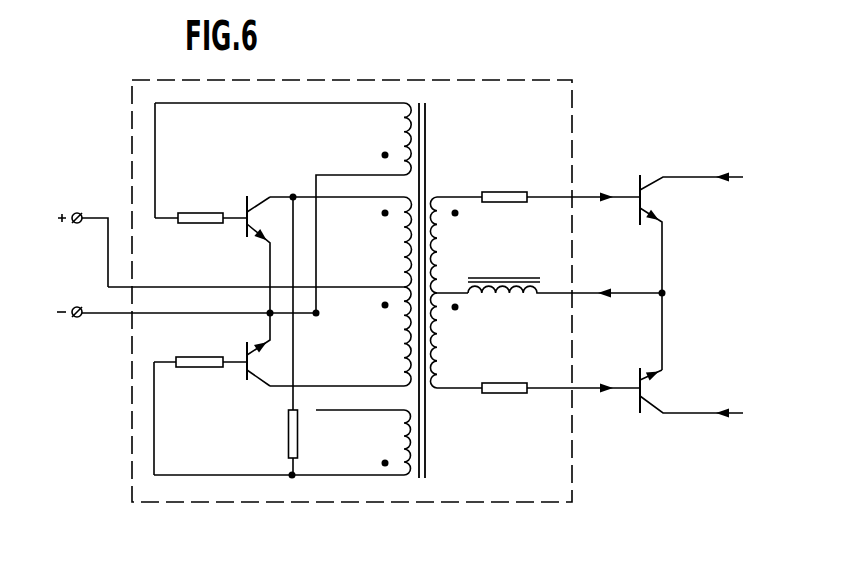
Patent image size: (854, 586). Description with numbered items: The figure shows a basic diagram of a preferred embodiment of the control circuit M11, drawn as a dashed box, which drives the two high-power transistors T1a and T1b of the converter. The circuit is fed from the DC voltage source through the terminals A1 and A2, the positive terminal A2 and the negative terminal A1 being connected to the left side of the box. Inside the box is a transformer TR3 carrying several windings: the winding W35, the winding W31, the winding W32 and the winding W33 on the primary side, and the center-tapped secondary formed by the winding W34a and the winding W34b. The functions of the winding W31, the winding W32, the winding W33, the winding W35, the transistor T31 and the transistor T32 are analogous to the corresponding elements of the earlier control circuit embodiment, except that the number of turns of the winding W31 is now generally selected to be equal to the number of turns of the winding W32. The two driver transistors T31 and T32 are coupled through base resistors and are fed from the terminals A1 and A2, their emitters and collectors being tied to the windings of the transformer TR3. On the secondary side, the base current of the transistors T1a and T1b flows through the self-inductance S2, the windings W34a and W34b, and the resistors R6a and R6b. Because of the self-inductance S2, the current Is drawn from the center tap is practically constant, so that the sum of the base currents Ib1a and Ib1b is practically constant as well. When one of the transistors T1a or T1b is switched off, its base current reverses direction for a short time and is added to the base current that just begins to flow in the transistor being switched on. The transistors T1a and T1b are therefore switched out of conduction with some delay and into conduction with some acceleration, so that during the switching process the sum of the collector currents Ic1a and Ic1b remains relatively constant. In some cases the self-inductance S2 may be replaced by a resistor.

The control circuit M11 is at (563, 486).
The transformer TR3 is at (440, 293).
The winding W35 is at (283, 208).
The winding W31 is at (260, 242).
The winding W32 is at (340, 336).
The winding W33 is at (282, 442).
The winding W34a is at (459, 340).
The winding W34b is at (459, 245).
The self-inductance S2 is at (565, 303).
The current Is is at (606, 283).
The resistor R6a is at (561, 405).
The resistor R6b is at (561, 213).
The base current Ib1a is at (607, 378).
The base current Ib1b is at (608, 188).
The collector current Ic1a is at (723, 428).
The collector current Ic1b is at (725, 165).
The high-power transistor T1a is at (691, 390).
The high-power transistor T1b is at (691, 272).
The transistor T31 is at (226, 229).
The transistor T32 is at (212, 408).
The terminal A1 is at (186, 330).
The terminal A2 is at (83, 234).